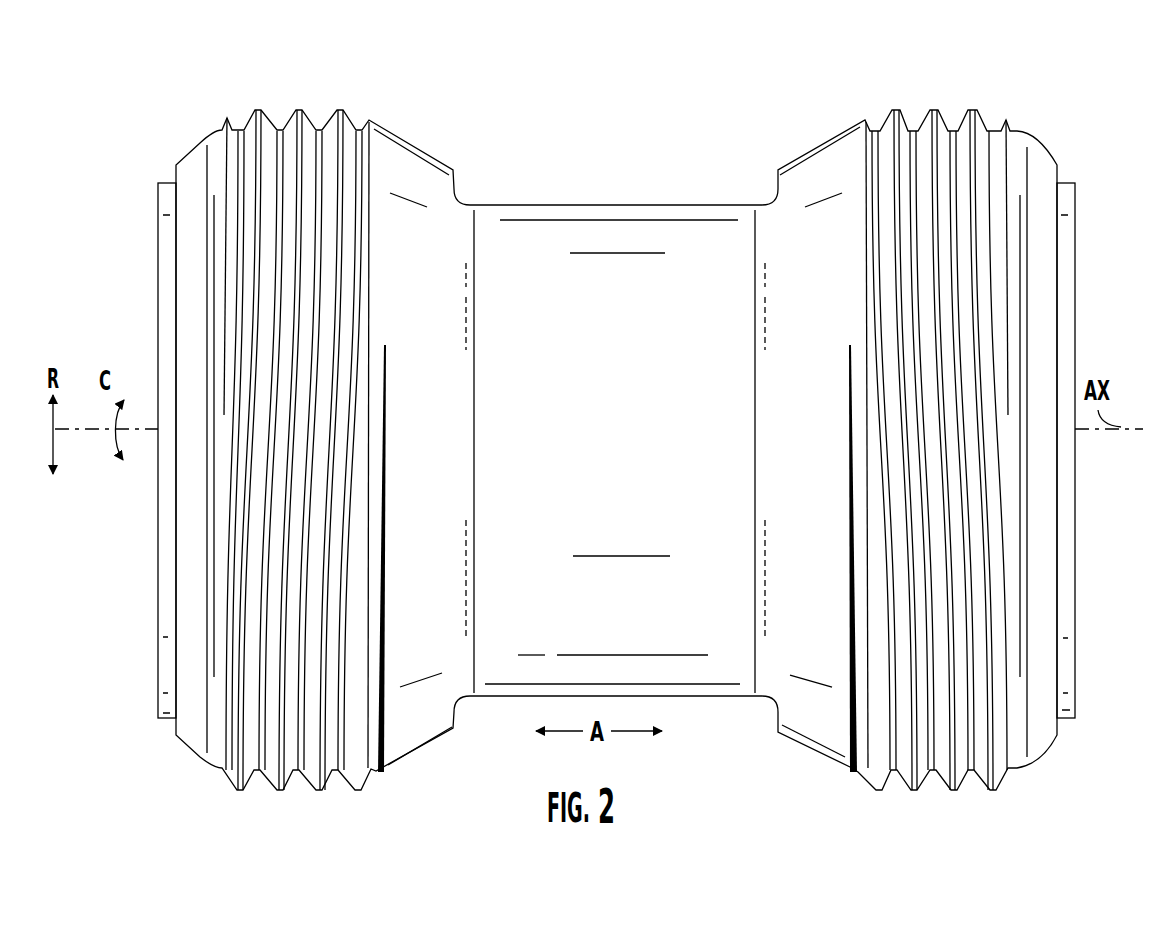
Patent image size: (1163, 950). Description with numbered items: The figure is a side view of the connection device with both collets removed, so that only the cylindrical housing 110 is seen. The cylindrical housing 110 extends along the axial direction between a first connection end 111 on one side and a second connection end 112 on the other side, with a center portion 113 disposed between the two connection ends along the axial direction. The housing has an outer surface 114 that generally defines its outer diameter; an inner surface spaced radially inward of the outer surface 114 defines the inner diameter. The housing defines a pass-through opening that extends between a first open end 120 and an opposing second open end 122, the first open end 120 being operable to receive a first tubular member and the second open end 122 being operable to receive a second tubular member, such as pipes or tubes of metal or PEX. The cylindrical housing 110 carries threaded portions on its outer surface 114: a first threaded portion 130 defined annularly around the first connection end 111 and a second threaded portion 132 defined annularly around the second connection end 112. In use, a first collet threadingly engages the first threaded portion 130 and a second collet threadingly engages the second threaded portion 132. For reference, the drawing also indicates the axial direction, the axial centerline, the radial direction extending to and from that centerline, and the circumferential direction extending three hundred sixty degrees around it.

The cylindrical housing 110 is at (456, 158).
The first connection end 111 is at (177, 152).
The second connection end 112 is at (1039, 140).
The center portion 113 is at (639, 196).
The outer surface 114 is at (519, 199).
The first open end 120 is at (154, 289).
The second open end 122 is at (1080, 287).
The first threaded portion 130 is at (285, 120).
The second threaded portion 132 is at (952, 126).